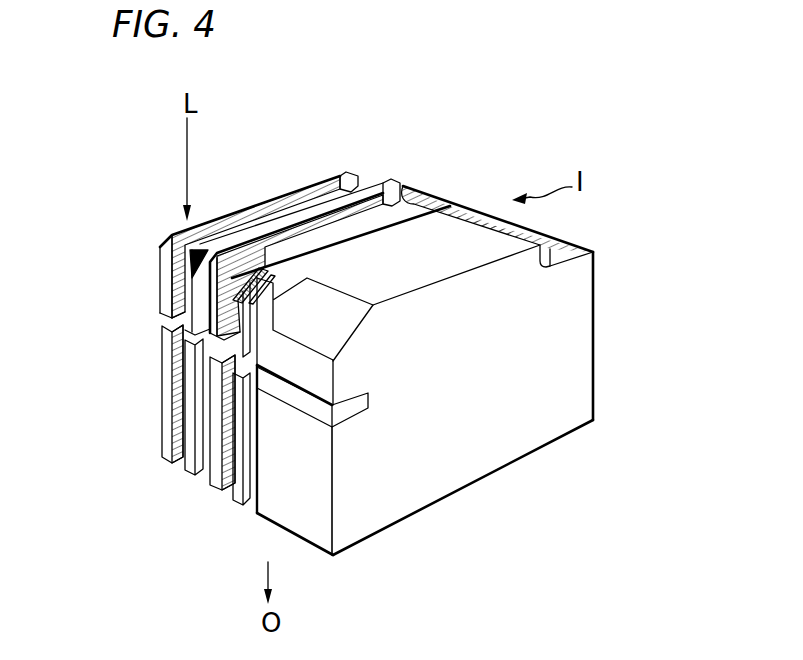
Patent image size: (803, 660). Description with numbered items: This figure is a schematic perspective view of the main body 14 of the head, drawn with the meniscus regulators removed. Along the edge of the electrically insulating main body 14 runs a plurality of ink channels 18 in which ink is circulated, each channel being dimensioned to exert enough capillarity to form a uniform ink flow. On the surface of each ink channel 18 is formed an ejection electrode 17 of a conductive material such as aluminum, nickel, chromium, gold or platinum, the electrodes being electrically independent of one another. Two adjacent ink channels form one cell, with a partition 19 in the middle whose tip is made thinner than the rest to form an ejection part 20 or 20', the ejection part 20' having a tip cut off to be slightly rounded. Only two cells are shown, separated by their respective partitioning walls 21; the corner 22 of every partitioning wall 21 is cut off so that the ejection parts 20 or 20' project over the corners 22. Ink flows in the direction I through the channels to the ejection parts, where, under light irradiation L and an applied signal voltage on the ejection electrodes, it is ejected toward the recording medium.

The main body 14 is at (553, 332).
The ejection electrode 17 is at (338, 212).
The ink channel 18 is at (430, 203).
The partition 19 is at (186, 303).
The ejection part 20 is at (210, 317).
The ejection part 20' is at (143, 263).
The partitioning wall 21 is at (252, 257).
The corner 22 is at (165, 246).